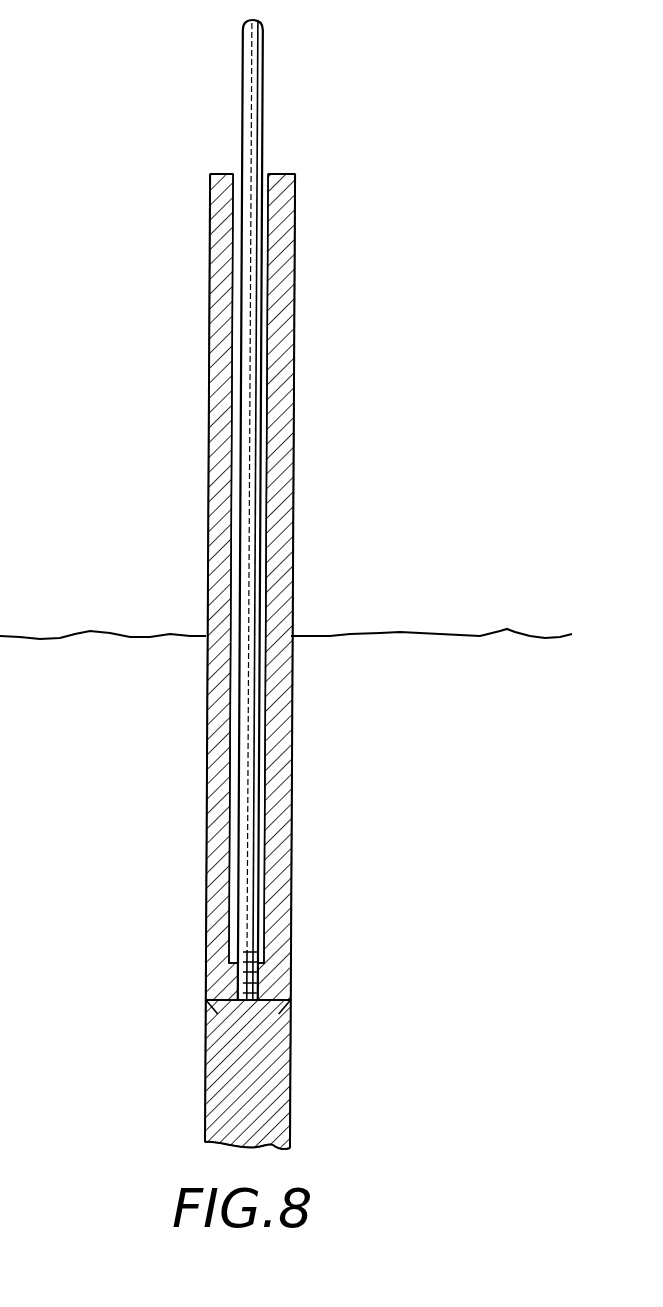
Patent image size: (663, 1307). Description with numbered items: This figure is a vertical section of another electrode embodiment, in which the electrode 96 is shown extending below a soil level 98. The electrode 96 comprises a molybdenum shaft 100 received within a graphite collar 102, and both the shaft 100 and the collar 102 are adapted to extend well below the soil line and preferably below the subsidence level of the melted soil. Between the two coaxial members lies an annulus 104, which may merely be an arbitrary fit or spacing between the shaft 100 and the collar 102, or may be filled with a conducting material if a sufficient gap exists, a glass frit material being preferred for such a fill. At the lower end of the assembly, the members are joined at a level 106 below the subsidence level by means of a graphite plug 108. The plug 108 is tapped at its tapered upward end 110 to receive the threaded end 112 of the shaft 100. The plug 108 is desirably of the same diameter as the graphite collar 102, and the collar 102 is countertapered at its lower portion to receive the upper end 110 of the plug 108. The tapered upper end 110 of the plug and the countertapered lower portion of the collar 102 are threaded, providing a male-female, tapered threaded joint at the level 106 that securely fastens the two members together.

The electrode 96 is at (343, 478).
The soil level 98 is at (464, 635).
The molybdenum shaft 100 is at (262, 82).
The graphite collar 102 is at (218, 428).
The annulus 104 is at (238, 232).
The level 106 is at (192, 989).
The graphite plug 108 is at (242, 1100).
The tapered upward end 110 is at (267, 997).
The threaded end 112 is at (212, 1000).